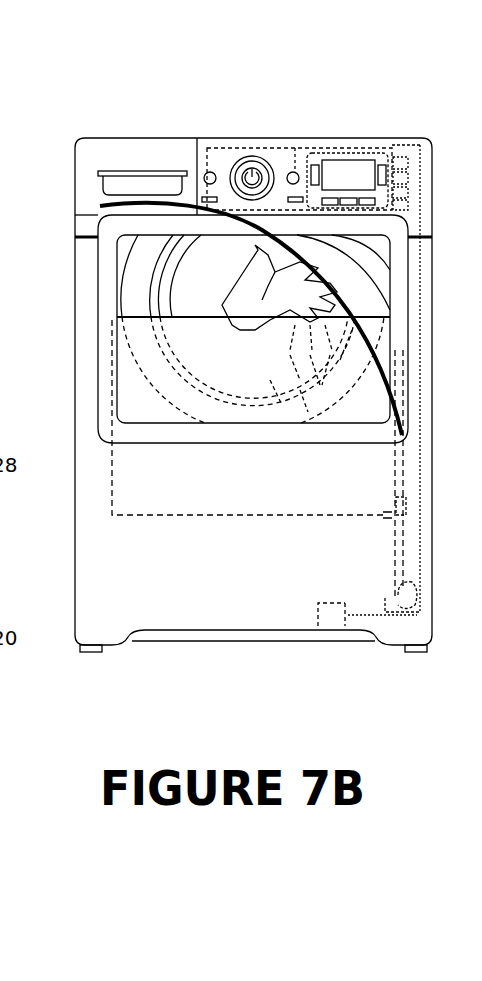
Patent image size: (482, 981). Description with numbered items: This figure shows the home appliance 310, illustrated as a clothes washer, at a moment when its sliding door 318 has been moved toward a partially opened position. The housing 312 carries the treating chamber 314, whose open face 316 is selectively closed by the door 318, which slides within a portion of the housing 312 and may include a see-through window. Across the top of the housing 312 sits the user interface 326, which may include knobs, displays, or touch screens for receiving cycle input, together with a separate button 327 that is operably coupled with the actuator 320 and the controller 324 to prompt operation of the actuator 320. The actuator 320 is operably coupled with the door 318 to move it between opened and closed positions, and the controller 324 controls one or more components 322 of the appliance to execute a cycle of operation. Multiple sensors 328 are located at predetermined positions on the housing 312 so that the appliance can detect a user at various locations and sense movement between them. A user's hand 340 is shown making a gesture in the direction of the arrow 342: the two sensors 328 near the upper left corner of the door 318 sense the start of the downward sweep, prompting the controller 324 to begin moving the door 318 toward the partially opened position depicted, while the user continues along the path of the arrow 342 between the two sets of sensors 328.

The home appliance 310 is at (50, 118).
The housing 312 is at (280, 134).
The treating chamber 314 is at (192, 393).
The open face 316 is at (117, 295).
The sliding door 318 is at (127, 357).
The actuator 320 is at (415, 620).
The component 322 is at (337, 640).
The controller 324 is at (375, 134).
The user interface 326 is at (387, 152).
The button 327 is at (209, 170).
The sensors 328 is at (115, 222).
The hand 340 is at (112, 335).
The arrow 342 is at (303, 248).